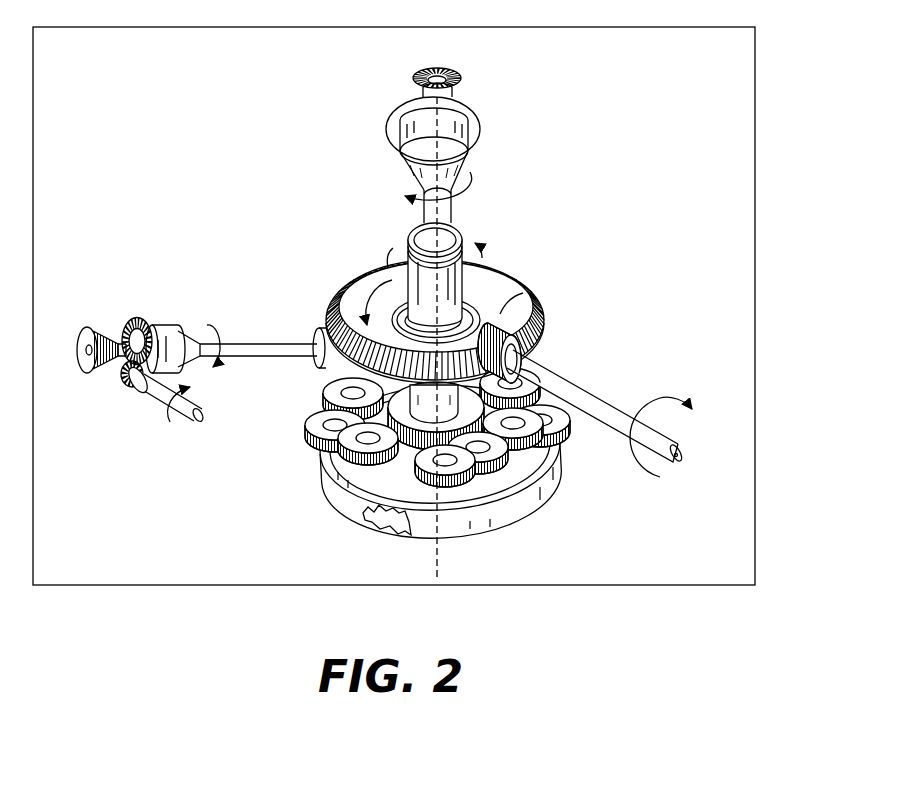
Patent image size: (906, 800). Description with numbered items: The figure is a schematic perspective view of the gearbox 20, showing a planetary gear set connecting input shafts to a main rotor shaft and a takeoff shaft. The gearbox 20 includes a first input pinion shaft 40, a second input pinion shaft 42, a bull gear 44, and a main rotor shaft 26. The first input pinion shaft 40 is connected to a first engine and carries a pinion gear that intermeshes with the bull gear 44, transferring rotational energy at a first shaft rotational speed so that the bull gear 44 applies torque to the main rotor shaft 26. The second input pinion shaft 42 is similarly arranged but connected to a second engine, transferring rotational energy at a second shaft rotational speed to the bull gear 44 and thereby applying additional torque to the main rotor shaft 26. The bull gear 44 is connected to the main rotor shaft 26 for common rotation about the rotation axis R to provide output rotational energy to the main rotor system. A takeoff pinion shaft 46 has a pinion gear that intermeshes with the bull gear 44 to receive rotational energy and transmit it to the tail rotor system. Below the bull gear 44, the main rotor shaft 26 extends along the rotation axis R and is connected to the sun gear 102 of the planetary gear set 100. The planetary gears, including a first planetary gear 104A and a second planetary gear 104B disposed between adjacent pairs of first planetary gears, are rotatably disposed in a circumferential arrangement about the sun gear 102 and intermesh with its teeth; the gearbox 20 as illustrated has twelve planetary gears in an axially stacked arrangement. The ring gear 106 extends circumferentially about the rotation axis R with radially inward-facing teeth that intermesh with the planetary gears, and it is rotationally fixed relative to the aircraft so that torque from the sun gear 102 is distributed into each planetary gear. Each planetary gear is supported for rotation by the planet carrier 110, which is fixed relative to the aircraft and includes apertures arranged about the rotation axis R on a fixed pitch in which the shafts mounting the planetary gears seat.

The gearbox 20 is at (755, 135).
The main rotor shaft 26 is at (443, 300).
The first input pinion shaft 40 is at (268, 364).
The second input pinion shaft 42 is at (443, 205).
The bull gear 44 is at (500, 310).
The takeoff pinion shaft 46 is at (597, 400).
The planetary gear set 100 is at (413, 505).
The sun gear 102 is at (503, 420).
The first planetary gear 104A is at (337, 477).
The second planetary gear 104B is at (437, 473).
The ring gear 106 is at (495, 513).
The planet carrier 110 is at (375, 525).
The rotation axis R is at (437, 544).